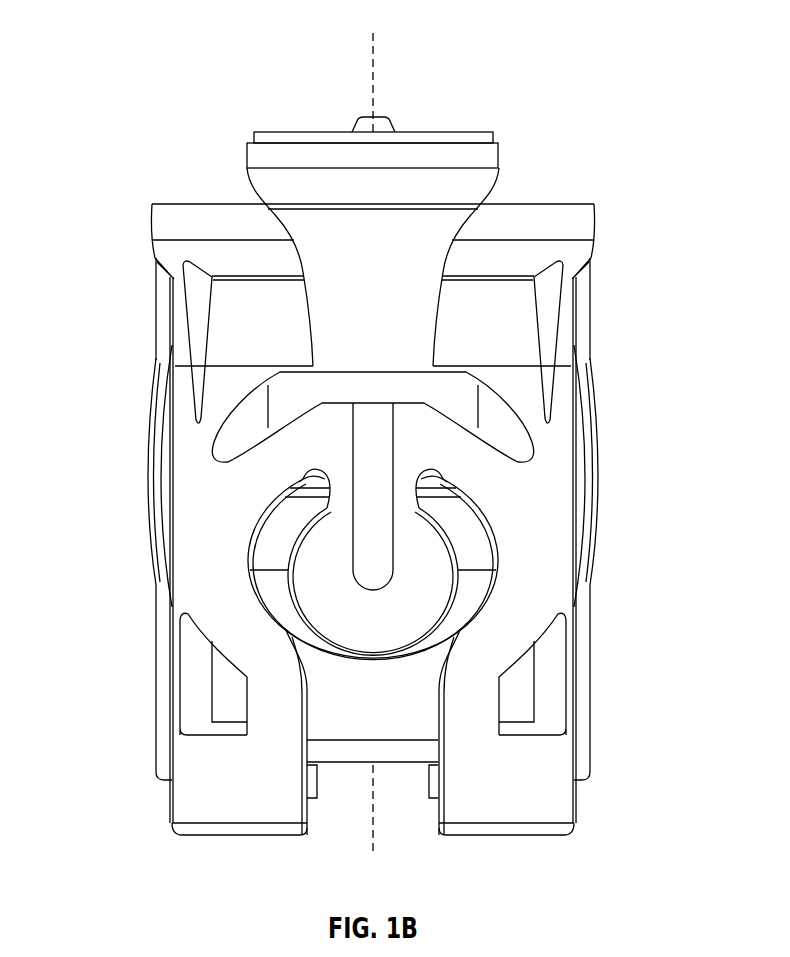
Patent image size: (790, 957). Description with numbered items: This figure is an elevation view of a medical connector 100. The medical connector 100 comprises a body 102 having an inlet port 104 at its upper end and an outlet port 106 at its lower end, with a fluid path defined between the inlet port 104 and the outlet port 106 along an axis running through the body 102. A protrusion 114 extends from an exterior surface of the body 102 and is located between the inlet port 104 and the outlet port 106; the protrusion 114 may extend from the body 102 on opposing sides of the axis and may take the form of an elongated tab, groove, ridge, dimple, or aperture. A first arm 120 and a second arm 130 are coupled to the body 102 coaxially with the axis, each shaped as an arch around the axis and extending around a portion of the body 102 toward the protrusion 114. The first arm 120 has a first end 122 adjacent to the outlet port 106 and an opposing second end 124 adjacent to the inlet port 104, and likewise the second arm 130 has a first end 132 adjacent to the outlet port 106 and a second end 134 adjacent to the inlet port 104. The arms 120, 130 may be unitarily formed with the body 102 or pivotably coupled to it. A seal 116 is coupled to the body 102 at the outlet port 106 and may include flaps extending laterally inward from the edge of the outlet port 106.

The medical connector 100 is at (131, 35).
The body 102 is at (400, 247).
The inlet port 104 is at (352, 131).
The outlet port 106 is at (362, 765).
The protrusion 114 is at (368, 574).
The seal 116 is at (377, 755).
The first arm 120 is at (187, 540).
The first end 122 is at (173, 813).
The second end 124 is at (152, 226).
The second arm 130 is at (563, 568).
The first end 132 is at (578, 818).
The second end 134 is at (598, 226).